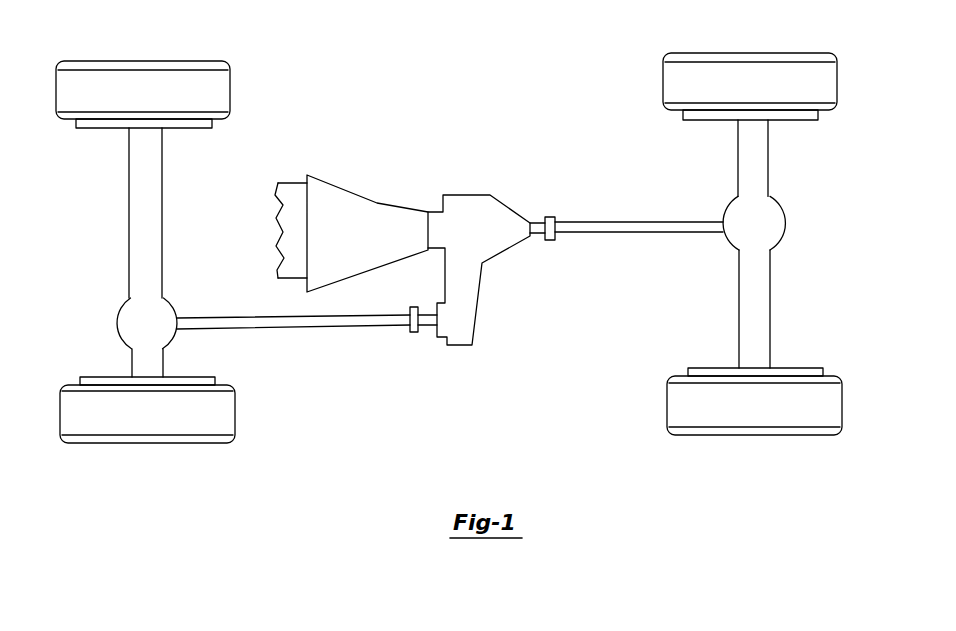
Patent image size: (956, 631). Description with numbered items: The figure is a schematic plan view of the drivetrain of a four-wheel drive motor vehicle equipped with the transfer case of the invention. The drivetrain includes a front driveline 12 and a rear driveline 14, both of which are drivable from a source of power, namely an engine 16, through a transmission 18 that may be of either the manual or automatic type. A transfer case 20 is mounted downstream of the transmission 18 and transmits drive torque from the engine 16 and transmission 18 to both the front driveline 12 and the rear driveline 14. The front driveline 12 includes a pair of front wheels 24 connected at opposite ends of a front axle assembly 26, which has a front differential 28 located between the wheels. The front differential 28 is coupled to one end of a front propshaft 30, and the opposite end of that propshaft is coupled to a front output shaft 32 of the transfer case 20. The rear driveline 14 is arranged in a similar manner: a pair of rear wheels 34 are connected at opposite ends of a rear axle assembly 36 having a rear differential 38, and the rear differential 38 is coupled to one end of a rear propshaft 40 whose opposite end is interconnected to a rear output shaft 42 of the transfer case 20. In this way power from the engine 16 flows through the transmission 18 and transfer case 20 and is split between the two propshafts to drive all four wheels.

The front driveline 12 is at (168, 229).
The rear driveline 14 is at (738, 221).
The engine 16 is at (290, 213).
The transmission 18 is at (377, 245).
The transfer case 20 is at (504, 254).
The front wheels 24 is at (97, 90).
The front axle assembly 26 is at (142, 180).
The front differential 28 is at (124, 308).
The front propshaft 30 is at (380, 323).
The front output shaft 32 is at (425, 330).
The rear wheels 34 is at (715, 93).
The rear axle assembly 36 is at (747, 153).
The rear differential 38 is at (765, 222).
The rear propshaft 40 is at (681, 228).
The rear output shaft 42 is at (547, 215).